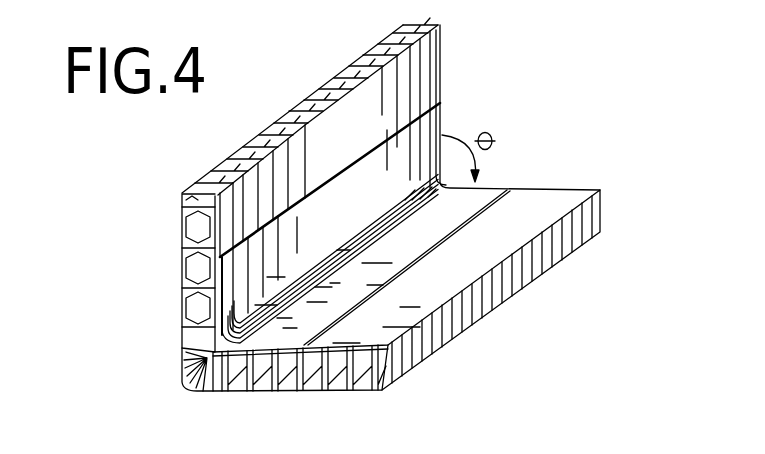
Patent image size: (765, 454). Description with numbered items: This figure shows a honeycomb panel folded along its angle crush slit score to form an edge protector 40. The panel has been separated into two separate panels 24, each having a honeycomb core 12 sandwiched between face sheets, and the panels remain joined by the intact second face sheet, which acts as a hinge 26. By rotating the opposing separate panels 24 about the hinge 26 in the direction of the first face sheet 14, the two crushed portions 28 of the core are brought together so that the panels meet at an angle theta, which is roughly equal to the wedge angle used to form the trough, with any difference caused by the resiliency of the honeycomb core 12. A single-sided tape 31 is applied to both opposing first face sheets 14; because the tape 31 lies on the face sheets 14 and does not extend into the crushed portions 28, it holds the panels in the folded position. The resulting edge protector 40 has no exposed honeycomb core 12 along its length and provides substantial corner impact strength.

The honeycomb core 12 is at (199, 380).
The first face sheet 14 is at (550, 216).
The separate panels 24 is at (388, 82).
The hinge 26 is at (185, 377).
The crushed portions 28 is at (205, 356).
The single-sided tape 31 is at (410, 143).
The edge protector 40 is at (531, 91).